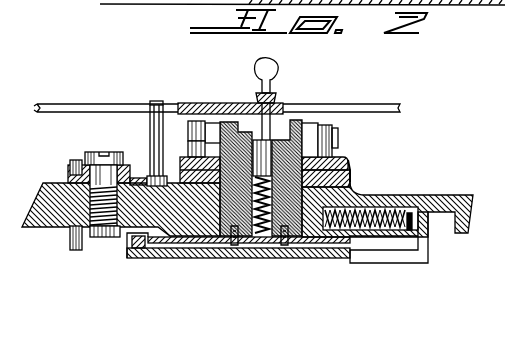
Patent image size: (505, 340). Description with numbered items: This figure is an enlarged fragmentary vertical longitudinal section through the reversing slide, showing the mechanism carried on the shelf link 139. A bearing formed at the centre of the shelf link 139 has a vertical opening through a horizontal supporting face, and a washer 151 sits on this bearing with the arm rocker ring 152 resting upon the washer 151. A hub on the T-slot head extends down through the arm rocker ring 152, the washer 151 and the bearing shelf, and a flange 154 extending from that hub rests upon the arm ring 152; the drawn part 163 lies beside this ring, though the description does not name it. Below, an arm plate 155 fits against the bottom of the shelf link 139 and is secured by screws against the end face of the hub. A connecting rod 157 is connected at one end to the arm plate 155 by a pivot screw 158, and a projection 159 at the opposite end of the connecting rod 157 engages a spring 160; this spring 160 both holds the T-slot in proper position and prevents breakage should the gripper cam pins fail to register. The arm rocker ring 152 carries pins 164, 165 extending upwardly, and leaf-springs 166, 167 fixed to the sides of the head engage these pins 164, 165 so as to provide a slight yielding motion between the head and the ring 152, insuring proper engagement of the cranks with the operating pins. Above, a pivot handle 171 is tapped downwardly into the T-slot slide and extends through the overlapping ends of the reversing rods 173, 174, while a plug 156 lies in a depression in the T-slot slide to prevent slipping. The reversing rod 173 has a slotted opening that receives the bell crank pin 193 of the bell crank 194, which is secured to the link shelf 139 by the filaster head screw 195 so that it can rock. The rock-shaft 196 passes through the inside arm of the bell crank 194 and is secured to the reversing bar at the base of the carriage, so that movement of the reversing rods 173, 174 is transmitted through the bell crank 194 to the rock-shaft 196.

The shelf link 139 is at (454, 195).
The washer 151 is at (351, 174).
The arm rocker ring 152 is at (351, 163).
The flange 154 is at (190, 150).
The arm plate 155 is at (130, 239).
The plug 156 is at (261, 138).
The connecting rod 157 is at (203, 258).
The pivot screw 158 is at (133, 252).
The projection 159 is at (430, 248).
The spring 160 is at (385, 222).
The block 163 is at (335, 157).
The pin 164 is at (195, 120).
The pin 165 is at (330, 127).
The leaf-spring 166 is at (212, 124).
The leaf-spring 167 is at (310, 128).
The pivot handle 171 is at (275, 66).
The reversing rod 173 is at (58, 104).
The reversing rod 174 is at (394, 104).
The bell crank pin 193 is at (151, 133).
The bell crank 194 is at (138, 180).
The filaster head screw 195 is at (95, 152).
The rock-shaft 196 is at (68, 238).